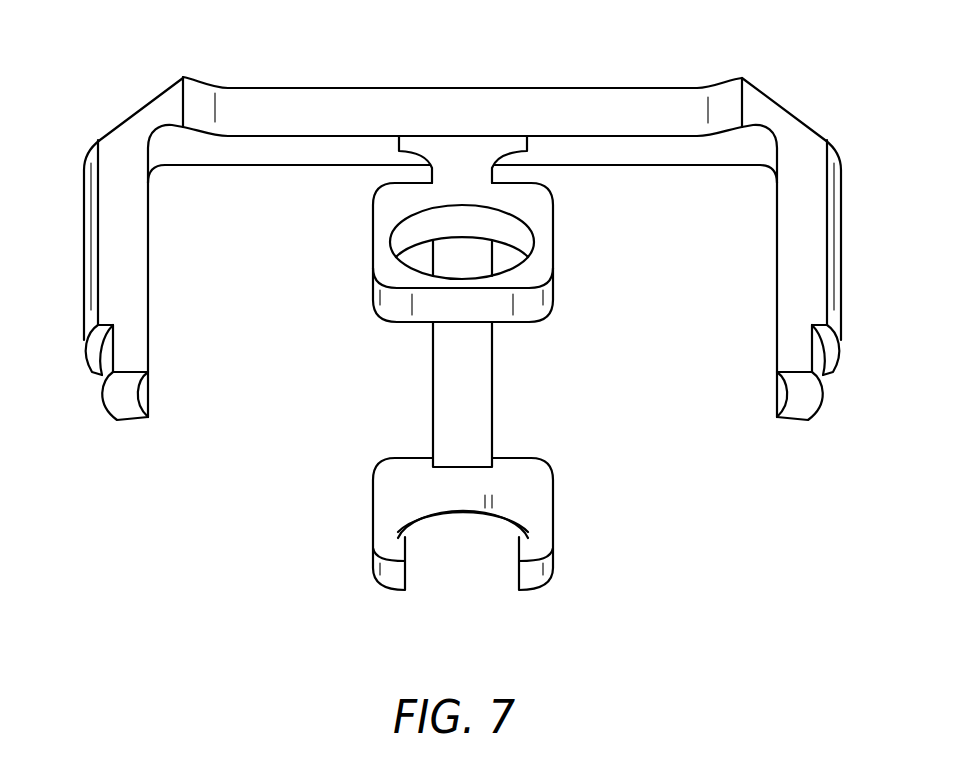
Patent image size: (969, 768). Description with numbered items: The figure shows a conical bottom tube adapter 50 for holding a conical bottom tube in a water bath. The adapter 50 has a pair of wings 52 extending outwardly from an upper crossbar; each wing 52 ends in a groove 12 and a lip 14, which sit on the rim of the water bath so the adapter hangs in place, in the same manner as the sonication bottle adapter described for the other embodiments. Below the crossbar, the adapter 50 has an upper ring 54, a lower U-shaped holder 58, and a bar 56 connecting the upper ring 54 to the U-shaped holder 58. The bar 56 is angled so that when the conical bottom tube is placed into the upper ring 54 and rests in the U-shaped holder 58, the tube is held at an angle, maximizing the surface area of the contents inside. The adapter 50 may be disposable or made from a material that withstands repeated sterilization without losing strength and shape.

The conical bottom tube adapter 50 is at (463, 307).
The wings 52 is at (812, 227).
The groove 12 is at (92, 347).
The lip 14 is at (130, 405).
The upper ring 54 is at (537, 263).
The bar 56 is at (478, 382).
The U-shaped holder 58 is at (545, 530).